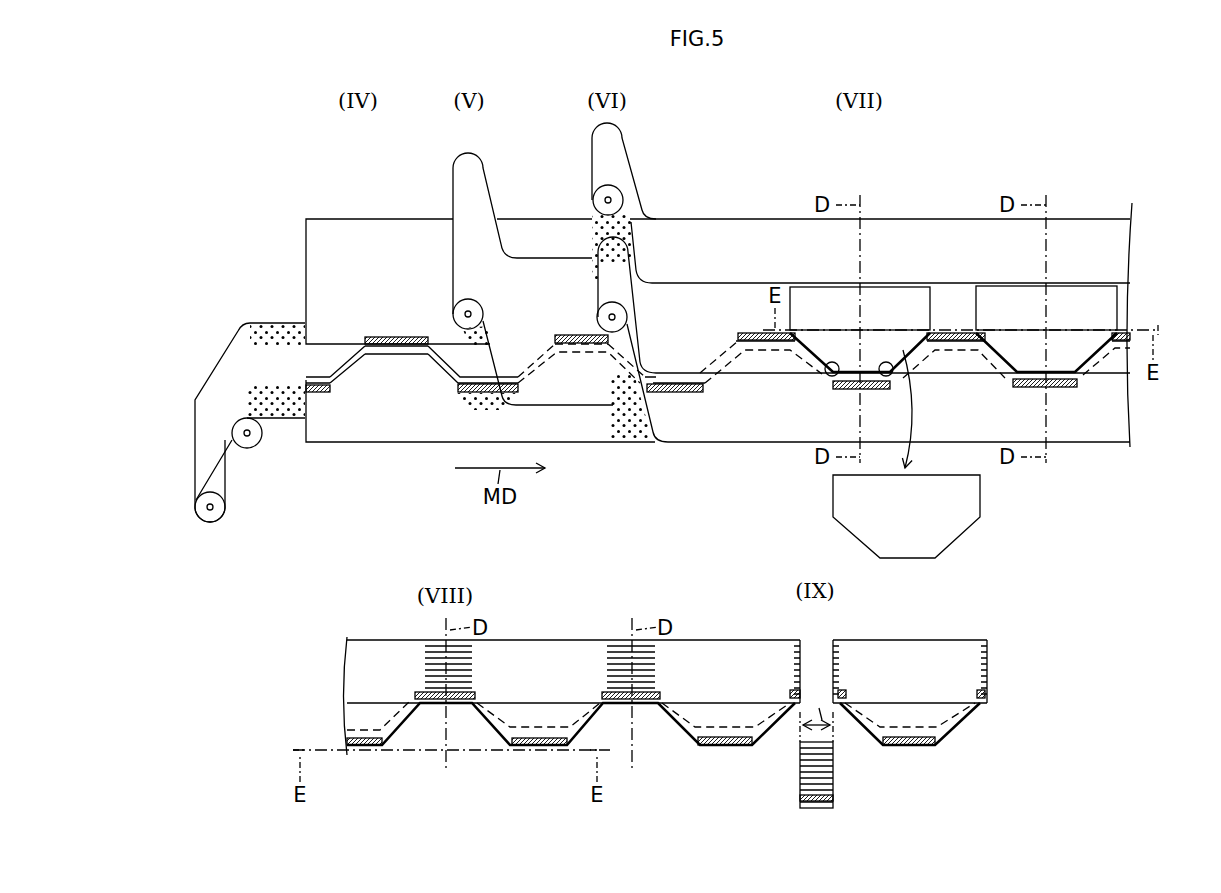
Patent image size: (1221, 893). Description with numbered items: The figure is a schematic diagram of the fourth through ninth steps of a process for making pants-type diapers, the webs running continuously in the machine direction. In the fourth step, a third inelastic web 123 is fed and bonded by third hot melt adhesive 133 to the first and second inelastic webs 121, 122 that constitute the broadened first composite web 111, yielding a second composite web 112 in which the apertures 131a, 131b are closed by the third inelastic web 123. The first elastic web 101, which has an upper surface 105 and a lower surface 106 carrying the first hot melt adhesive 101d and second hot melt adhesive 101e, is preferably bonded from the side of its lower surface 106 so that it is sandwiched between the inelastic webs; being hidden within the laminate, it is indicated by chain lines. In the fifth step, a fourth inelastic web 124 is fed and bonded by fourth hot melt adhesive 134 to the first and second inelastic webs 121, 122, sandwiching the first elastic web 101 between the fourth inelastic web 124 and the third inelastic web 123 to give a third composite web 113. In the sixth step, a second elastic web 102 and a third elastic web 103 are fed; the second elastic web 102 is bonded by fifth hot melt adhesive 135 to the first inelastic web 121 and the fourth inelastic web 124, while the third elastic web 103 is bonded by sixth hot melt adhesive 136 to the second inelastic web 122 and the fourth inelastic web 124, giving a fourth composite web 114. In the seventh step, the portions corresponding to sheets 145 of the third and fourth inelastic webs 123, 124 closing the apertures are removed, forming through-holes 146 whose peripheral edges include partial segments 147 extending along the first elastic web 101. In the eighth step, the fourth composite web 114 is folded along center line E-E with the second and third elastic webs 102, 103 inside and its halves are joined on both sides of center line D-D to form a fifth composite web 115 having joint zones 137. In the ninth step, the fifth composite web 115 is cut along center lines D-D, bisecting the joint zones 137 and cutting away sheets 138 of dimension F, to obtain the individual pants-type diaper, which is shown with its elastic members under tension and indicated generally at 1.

The absorbent article 1 is at (958, 625).
The first elastic web 101 is at (438, 362).
The first hot melt adhesive 101d is at (392, 336).
The second hot melt adhesive 101e is at (488, 395).
The second elastic web 102 is at (690, 232).
The third elastic web 103 is at (680, 425).
The upper surface 105 is at (340, 360).
The lower surface 106 is at (306, 379).
The first composite web 111 is at (364, 210).
The second composite web 112 is at (396, 450).
The third composite web 113 is at (569, 450).
The fourth composite web 114 is at (742, 455).
The fifth composite web 115 is at (413, 760).
The first inelastic web 121 is at (306, 243).
The second inelastic web 122 is at (332, 430).
The third inelastic web 123 is at (222, 384).
The fourth inelastic web 124 is at (487, 195).
The aperture 131a is at (318, 356).
The aperture 131b is at (367, 372).
The third hot melt adhesive 133 is at (270, 326).
The fourth hot melt adhesive 134 is at (455, 340).
The fifth hot melt adhesive 135 is at (588, 228).
The sixth hot melt adhesive 136 is at (627, 430).
The joint zone 137 is at (474, 643).
The sheet 138 is at (825, 786).
The sheet 145 is at (962, 527).
The through-hole 146 is at (908, 300).
The partial segment 147 is at (835, 378).